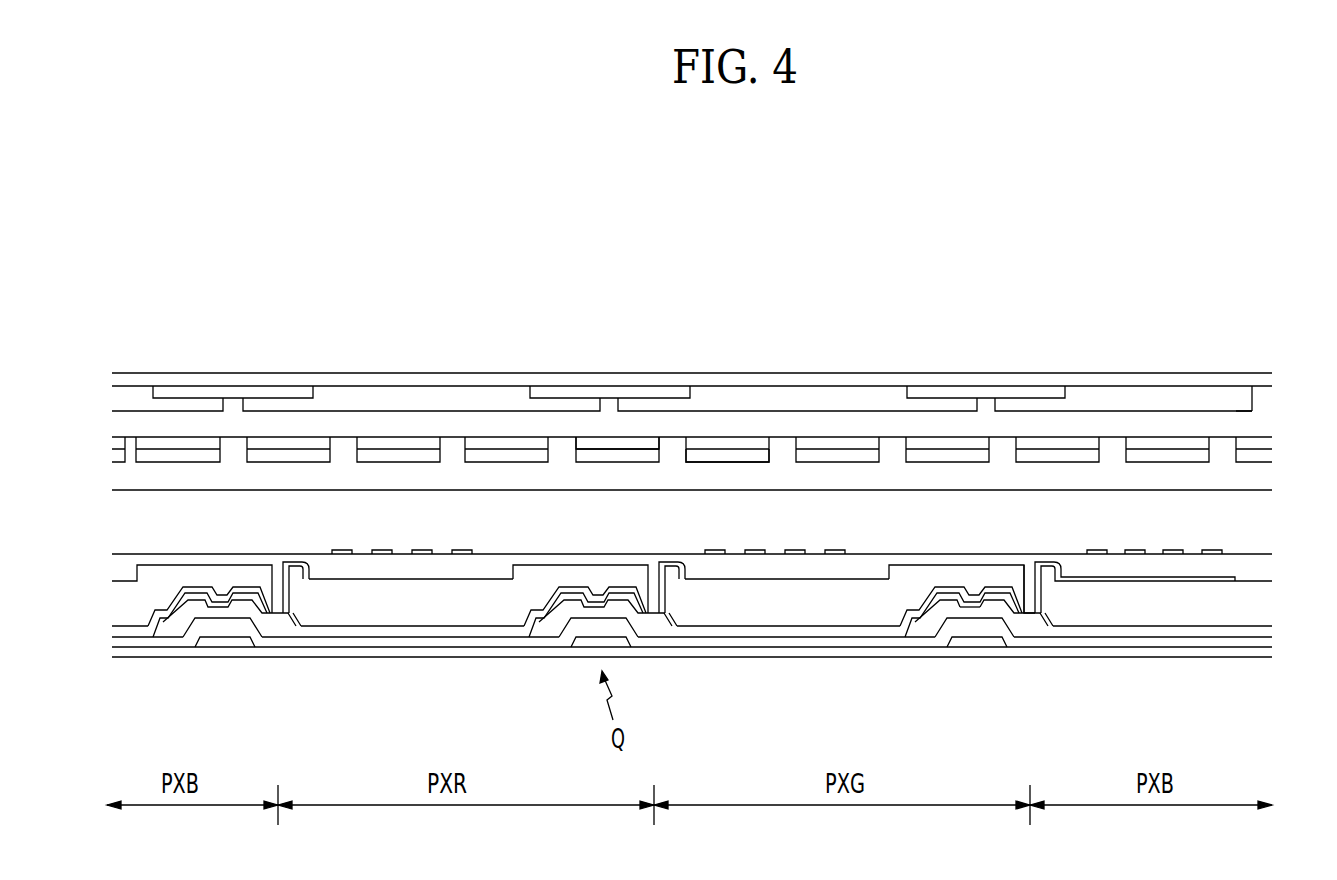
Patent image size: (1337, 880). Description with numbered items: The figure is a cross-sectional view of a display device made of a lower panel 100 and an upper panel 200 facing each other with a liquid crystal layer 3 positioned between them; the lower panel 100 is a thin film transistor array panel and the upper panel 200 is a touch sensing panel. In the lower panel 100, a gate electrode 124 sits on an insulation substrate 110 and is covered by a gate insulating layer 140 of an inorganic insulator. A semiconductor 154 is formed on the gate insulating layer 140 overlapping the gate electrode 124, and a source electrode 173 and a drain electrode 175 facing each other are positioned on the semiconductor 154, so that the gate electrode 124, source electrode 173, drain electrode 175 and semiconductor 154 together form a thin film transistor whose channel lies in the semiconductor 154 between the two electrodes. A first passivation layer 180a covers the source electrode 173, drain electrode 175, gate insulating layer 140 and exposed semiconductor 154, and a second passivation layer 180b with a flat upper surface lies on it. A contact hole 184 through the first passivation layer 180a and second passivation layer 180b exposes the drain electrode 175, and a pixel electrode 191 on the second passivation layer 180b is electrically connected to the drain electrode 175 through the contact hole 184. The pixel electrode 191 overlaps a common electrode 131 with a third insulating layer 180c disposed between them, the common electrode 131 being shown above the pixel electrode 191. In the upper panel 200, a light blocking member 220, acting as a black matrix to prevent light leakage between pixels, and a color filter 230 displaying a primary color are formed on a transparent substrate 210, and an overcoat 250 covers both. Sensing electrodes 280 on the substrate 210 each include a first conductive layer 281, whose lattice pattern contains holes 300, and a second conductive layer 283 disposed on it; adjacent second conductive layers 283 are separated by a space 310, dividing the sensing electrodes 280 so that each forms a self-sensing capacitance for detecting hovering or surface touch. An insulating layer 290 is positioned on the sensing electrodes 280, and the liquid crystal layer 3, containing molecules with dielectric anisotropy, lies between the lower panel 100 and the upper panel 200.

The liquid crystal layer 3 is at (1264, 525).
The lower panel 100 is at (1277, 554).
The insulation substrate 110 is at (768, 652).
The gate electrode 124 is at (977, 642).
The common electrode 131 is at (1130, 555).
The gate insulating layer 140 is at (1037, 640).
The semiconductor 154 is at (925, 630).
The source electrode 173 is at (897, 618).
The drain electrode 175 is at (1053, 620).
The first passivation layer 180a is at (848, 632).
The second passivation layer 180b is at (1252, 601).
The third insulating layer 180c is at (730, 580).
The contact hole 184 is at (1032, 556).
The pixel electrode 191 is at (1178, 582).
The upper panel 200 is at (1277, 373).
The substrate 210 is at (1125, 382).
The light blocking member 220 is at (978, 393).
The color filter 230 is at (1186, 393).
The overcoat 250 is at (1241, 422).
The sensing electrode 280 is at (732, 288).
The first conductive layer 281 is at (649, 442).
The second conductive layer 283 is at (706, 457).
The insulating layer 290 is at (555, 478).
The holes 300 is at (345, 453).
The space 310 is at (455, 450).